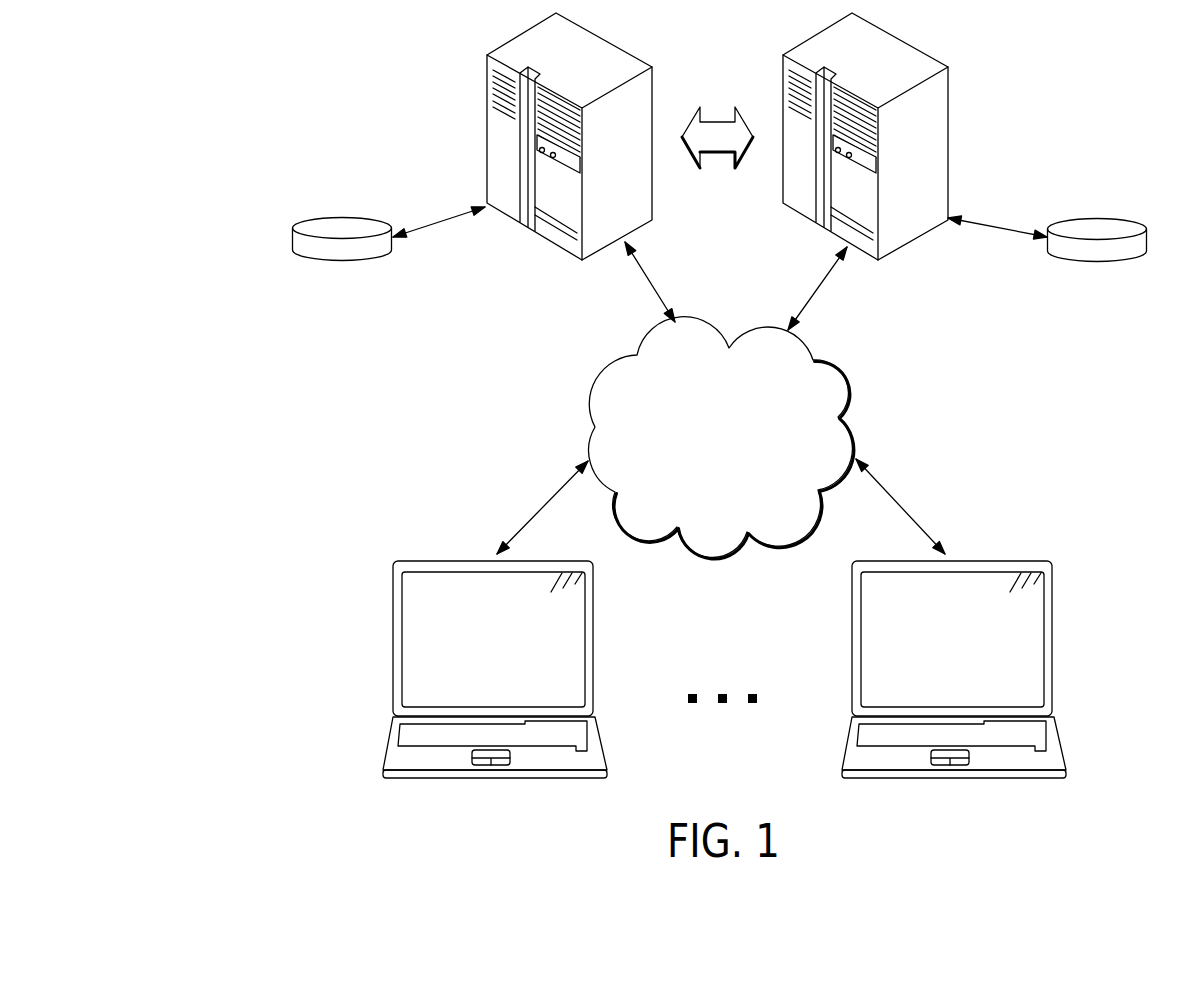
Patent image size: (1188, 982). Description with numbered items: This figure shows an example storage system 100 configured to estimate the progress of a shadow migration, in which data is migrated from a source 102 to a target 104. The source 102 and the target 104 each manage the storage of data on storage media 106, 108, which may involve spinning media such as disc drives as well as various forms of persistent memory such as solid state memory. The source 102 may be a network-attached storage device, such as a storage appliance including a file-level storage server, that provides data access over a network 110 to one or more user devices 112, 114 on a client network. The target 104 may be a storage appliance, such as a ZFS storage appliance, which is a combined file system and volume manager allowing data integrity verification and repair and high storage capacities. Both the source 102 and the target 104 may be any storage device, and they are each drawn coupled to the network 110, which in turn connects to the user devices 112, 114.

The storage system 100 is at (253, 412).
The source 102 is at (487, 137).
The target 104 is at (947, 137).
The storage media 106 is at (342, 218).
The storage media 108 is at (1097, 219).
The network 110 is at (737, 461).
The user device 112 is at (393, 662).
The user device 114 is at (1052, 655).